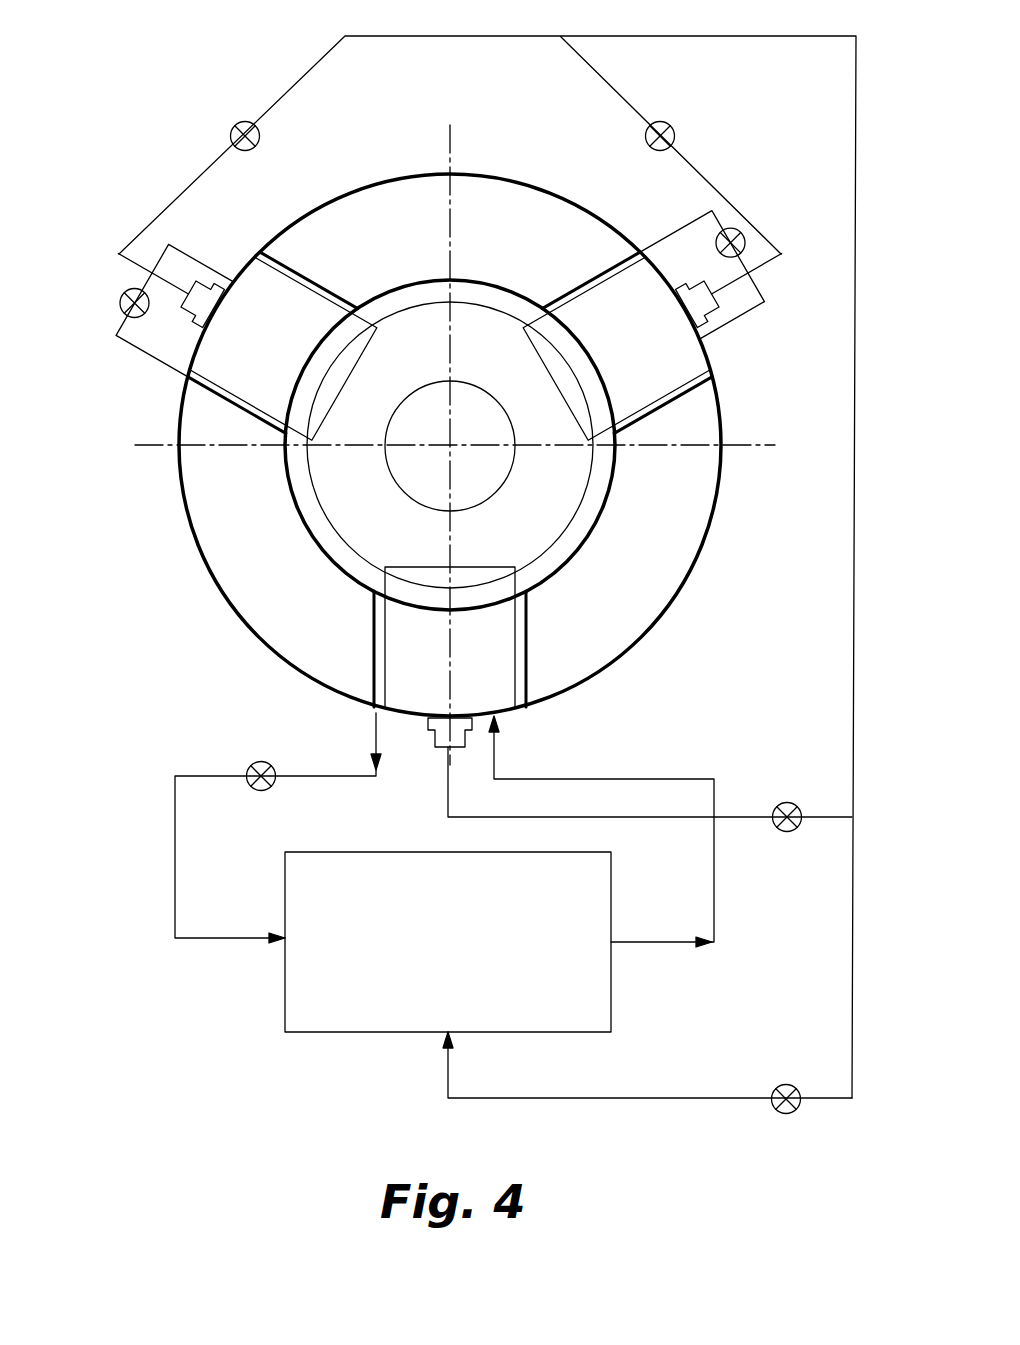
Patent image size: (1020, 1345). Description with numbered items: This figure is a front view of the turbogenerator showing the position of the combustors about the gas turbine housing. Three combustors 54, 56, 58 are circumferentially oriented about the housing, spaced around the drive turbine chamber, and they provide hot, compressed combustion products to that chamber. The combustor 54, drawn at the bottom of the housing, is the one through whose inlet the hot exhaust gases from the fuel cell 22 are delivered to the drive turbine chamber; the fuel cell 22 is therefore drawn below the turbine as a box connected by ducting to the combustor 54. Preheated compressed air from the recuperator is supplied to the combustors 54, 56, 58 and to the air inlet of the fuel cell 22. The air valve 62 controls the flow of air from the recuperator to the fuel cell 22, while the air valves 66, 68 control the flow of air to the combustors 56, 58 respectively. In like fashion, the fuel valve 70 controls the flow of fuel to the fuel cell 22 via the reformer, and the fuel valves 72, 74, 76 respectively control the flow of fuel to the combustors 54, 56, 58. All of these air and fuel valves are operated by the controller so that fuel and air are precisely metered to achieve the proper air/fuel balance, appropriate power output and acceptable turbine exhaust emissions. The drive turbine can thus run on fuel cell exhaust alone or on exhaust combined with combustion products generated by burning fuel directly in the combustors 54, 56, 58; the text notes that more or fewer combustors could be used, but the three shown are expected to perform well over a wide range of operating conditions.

The fuel cell 22 is at (284, 1022).
The combustor 54 is at (408, 658).
The combustor 56 is at (247, 392).
The combustor 58 is at (650, 392).
The air valve 62 is at (259, 761).
The air valve 66 is at (231, 129).
The air valve 68 is at (674, 136).
The fuel valve 70 is at (787, 1084).
The fuel valve 72 is at (788, 802).
The fuel valve 74 is at (120, 303).
The fuel valve 76 is at (745, 243).